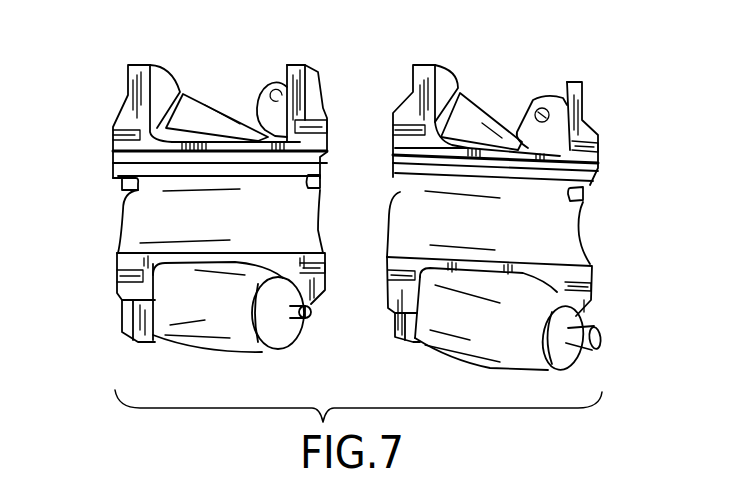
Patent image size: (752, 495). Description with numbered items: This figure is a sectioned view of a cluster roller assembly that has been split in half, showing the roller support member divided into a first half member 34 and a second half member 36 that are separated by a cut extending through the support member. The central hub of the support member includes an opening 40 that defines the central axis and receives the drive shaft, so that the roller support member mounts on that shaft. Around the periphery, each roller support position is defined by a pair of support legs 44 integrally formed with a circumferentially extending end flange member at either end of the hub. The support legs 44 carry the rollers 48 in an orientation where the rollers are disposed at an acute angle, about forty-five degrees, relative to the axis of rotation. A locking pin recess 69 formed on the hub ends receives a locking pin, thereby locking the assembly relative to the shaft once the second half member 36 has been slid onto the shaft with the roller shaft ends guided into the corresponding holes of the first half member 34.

The first half member 34 is at (230, 73).
The second half member 36 is at (512, 68).
The opening 40 is at (553, 240).
The support legs 44 is at (298, 78).
The rollers 48 is at (231, 345).
The locking pin recess 69 is at (123, 184).